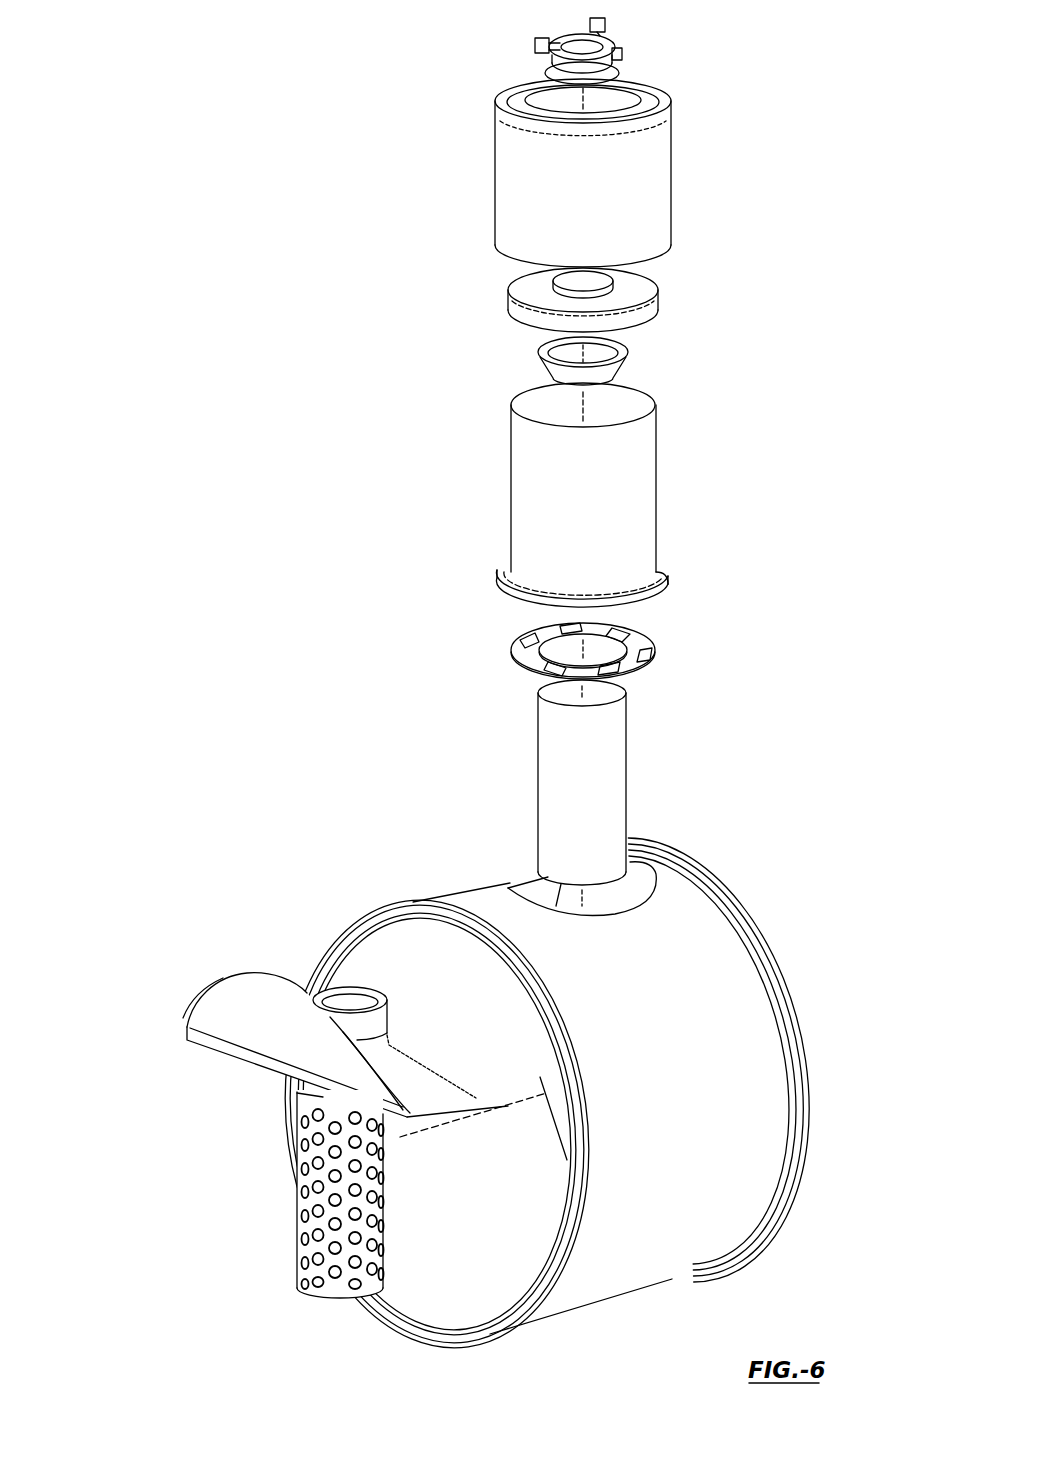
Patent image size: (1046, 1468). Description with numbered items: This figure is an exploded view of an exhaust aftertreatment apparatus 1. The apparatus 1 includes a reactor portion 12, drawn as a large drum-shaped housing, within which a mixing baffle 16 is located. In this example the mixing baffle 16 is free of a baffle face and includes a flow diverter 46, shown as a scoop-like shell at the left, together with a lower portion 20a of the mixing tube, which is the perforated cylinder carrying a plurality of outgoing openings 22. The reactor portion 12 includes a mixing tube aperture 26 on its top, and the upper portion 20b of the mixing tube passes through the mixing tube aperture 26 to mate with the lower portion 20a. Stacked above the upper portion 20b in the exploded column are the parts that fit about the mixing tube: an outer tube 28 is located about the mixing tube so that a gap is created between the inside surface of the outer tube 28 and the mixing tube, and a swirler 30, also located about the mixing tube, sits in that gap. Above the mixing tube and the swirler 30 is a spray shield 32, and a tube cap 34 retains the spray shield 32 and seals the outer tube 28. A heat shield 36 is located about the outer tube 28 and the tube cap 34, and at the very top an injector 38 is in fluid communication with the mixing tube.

The exhaust aftertreatment apparatus 1 is at (788, 390).
The reactor portion 12 is at (648, 1218).
The mixing baffle 16 is at (246, 1002).
The lower portion of the mixing tube 20a is at (259, 1194).
The upper portion of the mixing tube 20b is at (536, 768).
The outgoing openings 22 is at (316, 1221).
The mixing tube aperture 26 is at (643, 883).
The outer tube 28 is at (507, 490).
The swirler 30 is at (509, 652).
The spray shield 32 is at (534, 352).
The tube cap 34 is at (507, 295).
The heat shield 36 is at (492, 178).
The injector 38 is at (542, 51).
The flow diverter 46 is at (217, 975).